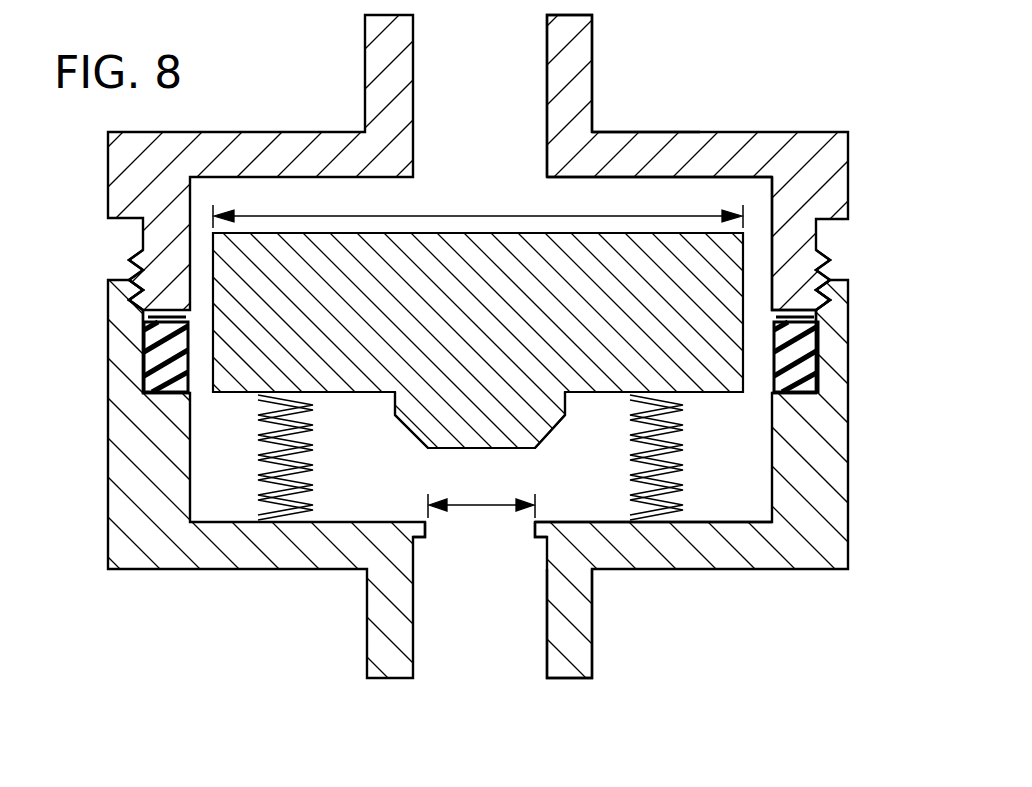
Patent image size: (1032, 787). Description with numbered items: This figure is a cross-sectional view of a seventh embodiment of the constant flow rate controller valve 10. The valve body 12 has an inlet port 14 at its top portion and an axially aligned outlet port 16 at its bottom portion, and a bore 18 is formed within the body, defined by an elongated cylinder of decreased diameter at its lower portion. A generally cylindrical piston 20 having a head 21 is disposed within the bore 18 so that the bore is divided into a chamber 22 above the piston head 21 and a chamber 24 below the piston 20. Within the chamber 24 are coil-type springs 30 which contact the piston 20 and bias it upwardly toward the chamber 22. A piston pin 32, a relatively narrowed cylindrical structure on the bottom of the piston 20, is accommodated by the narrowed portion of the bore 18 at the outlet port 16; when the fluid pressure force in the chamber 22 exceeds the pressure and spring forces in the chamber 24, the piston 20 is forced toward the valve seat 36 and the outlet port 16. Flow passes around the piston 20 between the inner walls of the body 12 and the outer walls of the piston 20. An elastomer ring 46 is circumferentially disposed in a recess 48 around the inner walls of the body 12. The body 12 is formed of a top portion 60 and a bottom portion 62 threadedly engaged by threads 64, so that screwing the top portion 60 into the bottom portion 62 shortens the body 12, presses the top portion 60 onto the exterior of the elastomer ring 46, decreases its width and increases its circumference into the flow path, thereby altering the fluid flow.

The constant flow rate controller valve 10 is at (672, 64).
The valve body 12 is at (605, 131).
The inlet port 14 is at (524, 45).
The outlet port 16 is at (515, 660).
The bore 18 is at (757, 295).
The piston 20 is at (727, 253).
The head 21 is at (667, 232).
The chamber 22 is at (738, 192).
The chamber 24 is at (742, 505).
The springs 30 is at (262, 445).
The piston pin 32 is at (405, 433).
The valve seat 36 is at (530, 538).
The elastomer ring 46 is at (790, 357).
The recess 48 is at (800, 410).
The top portion 60 is at (108, 158).
The bottom portion 62 is at (820, 497).
The threads 64 is at (130, 257).